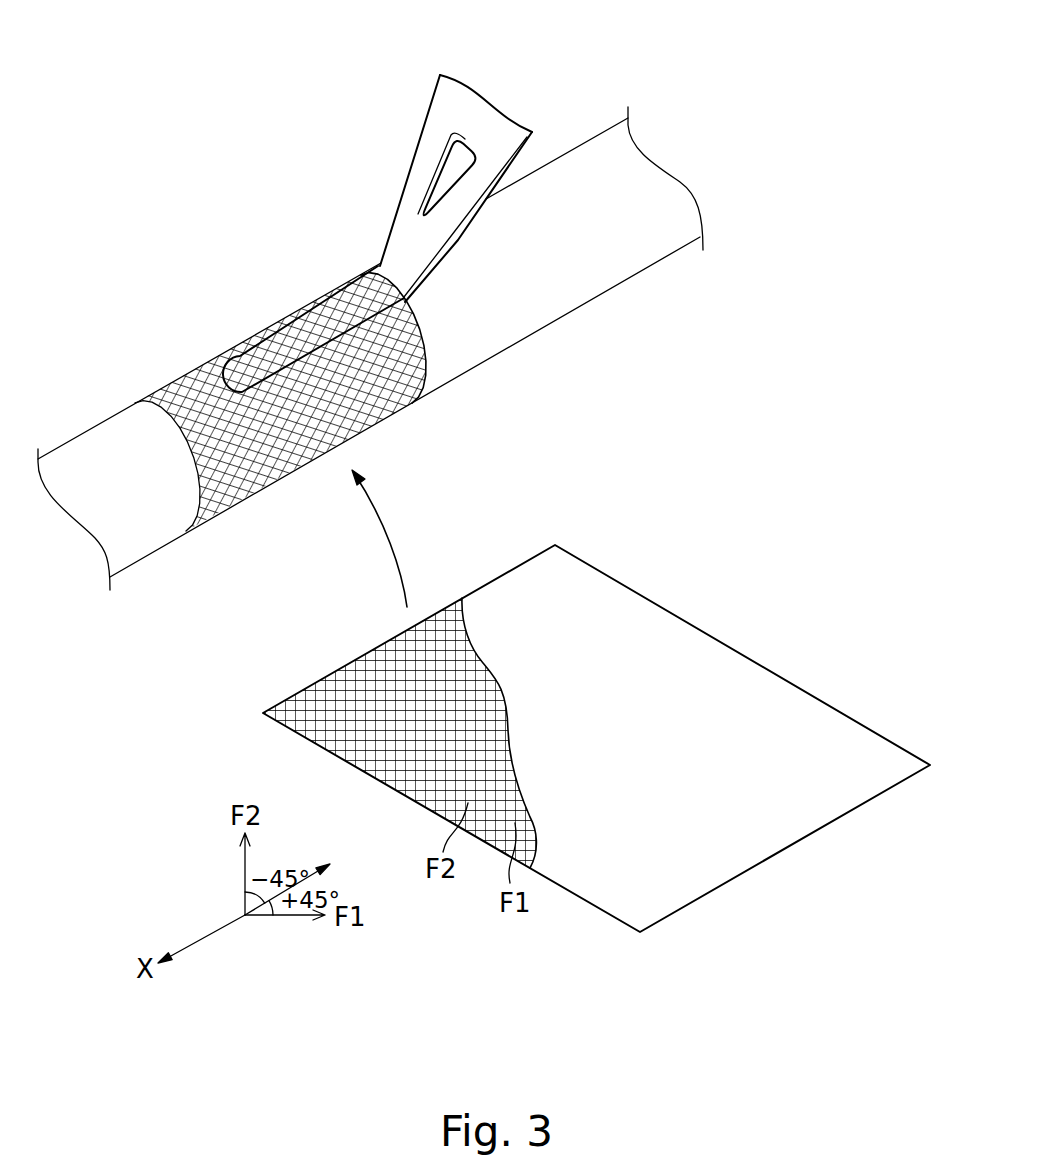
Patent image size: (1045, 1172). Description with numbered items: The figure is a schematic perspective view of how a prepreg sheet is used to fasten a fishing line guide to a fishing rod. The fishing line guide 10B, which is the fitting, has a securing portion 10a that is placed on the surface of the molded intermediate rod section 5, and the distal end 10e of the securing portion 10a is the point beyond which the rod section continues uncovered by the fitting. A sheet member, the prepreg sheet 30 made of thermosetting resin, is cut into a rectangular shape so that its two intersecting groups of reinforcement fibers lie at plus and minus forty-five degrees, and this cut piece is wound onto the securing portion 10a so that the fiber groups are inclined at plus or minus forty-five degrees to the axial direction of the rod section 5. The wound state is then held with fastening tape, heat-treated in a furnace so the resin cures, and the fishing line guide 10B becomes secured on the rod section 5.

The rod section 5 is at (650, 182).
The fishing line guide 10B is at (501, 87).
The securing portion 10a is at (408, 406).
The distal end 10e is at (203, 367).
The prepreg sheet 30 is at (265, 330).